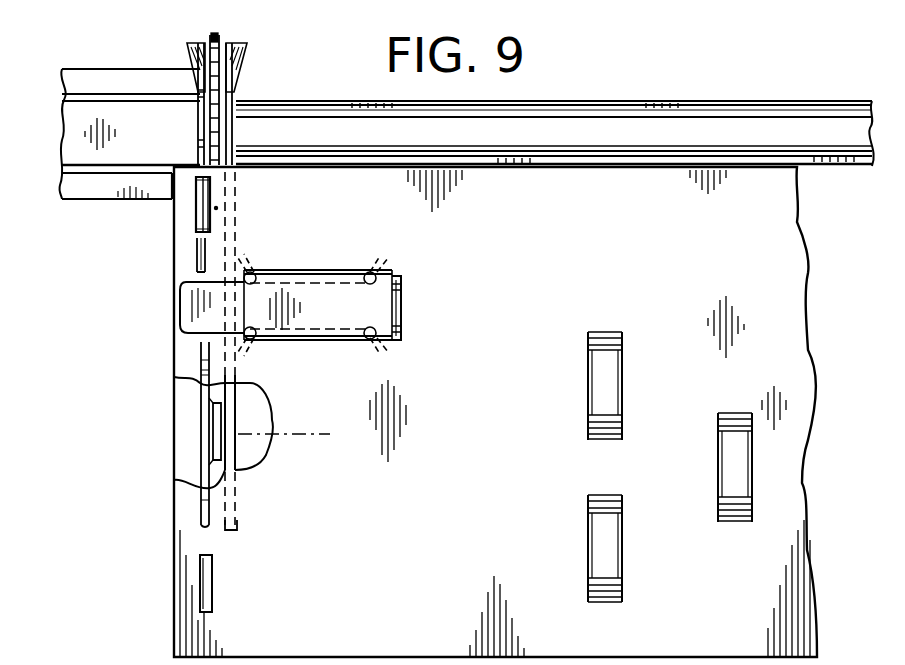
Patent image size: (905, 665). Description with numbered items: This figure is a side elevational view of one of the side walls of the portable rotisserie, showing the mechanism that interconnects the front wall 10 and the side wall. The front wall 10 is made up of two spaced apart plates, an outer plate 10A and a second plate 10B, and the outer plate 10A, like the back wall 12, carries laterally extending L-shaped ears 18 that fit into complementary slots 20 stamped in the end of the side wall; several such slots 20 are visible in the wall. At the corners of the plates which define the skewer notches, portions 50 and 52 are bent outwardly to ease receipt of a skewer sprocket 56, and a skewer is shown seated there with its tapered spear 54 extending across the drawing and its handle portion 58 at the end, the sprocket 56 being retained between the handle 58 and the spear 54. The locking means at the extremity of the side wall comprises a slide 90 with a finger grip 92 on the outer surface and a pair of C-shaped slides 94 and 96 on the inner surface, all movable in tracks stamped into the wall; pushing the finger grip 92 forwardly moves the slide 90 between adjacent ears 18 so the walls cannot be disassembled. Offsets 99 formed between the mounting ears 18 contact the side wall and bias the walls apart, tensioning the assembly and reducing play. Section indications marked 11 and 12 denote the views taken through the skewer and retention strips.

The front wall 10 is at (298, 197).
The outer plate 10A is at (196, 196).
The inner plate 10B is at (240, 528).
The section line 11- 11 is at (575, 283).
The back wall 12 is at (80, 480).
The L-shaped ears 18 is at (198, 265).
The slots 20 is at (214, 207).
The bent corner 50 is at (198, 66).
The bent corner 52 is at (246, 48).
The spear 54 is at (682, 130).
The sprocket 56 is at (216, 34).
The handle portion 58 is at (160, 150).
The slide 90 is at (340, 315).
The finger grip 92 is at (402, 298).
The C-shaped slide 94 is at (376, 263).
The C-shaped slide 96 is at (391, 359).
The offsets 99 is at (201, 434).